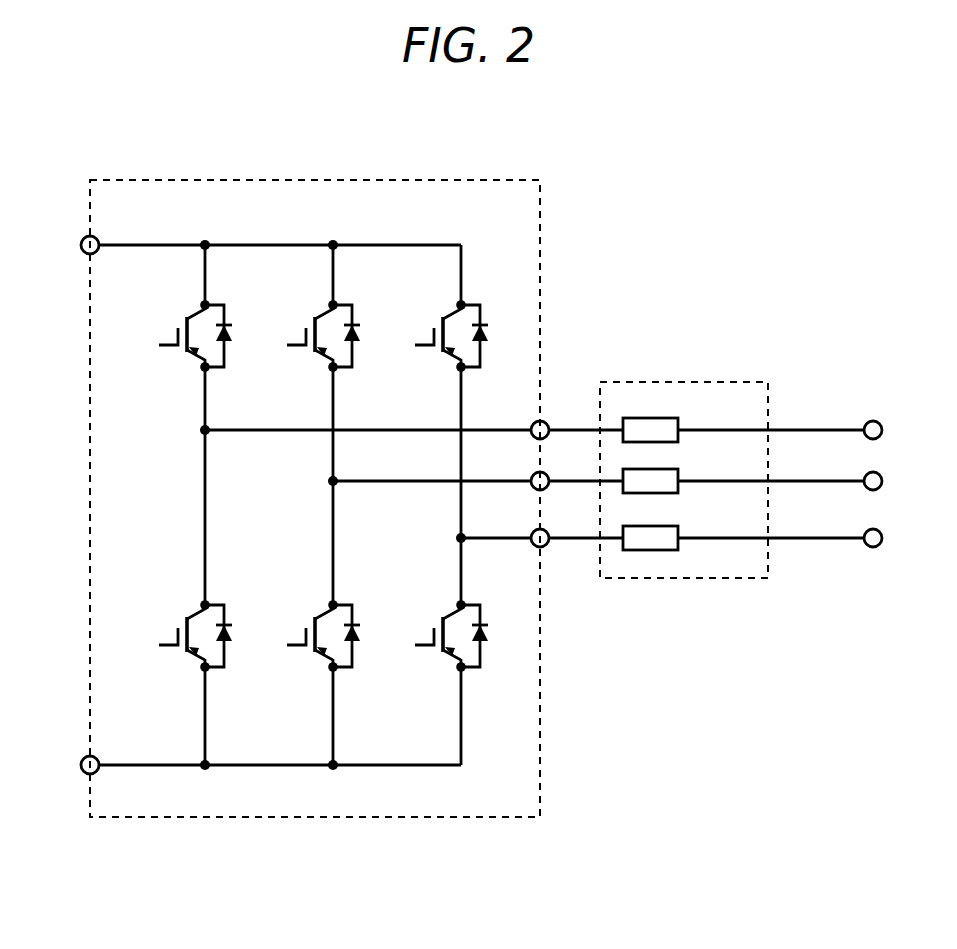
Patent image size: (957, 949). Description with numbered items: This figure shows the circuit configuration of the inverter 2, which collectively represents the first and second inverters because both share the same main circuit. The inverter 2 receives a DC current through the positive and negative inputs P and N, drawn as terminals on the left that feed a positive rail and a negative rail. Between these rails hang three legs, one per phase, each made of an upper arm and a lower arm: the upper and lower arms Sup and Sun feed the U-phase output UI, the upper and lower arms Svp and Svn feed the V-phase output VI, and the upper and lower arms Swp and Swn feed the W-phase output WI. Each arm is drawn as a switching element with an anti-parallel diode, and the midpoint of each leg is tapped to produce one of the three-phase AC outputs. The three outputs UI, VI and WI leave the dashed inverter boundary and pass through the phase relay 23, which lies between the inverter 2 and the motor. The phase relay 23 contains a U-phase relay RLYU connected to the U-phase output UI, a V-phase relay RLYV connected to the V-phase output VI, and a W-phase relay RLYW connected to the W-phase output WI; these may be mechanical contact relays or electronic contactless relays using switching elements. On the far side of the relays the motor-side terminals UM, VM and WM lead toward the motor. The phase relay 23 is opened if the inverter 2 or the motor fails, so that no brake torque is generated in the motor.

The inverter 2 is at (335, 817).
The phase relay 23 is at (688, 580).
The positive input P is at (68, 244).
The negative input N is at (67, 764).
The U-phase output UI is at (523, 415).
The V-phase output VI is at (523, 467).
The W-phase output WI is at (519, 524).
The motor U-phase terminal UM is at (843, 412).
The motor V-phase terminal VM is at (843, 468).
The motor W-phase terminal WM is at (841, 525).
The upper arm Sup is at (183, 322).
The upper arm Svp is at (314, 322).
The upper arm Swp is at (438, 322).
The lower arm Sun is at (177, 628).
The lower arm Svn is at (306, 628).
The lower arm Swn is at (434, 628).
The U-phase relay RLYU is at (690, 419).
The V-phase relay RLYV is at (690, 473).
The W-phase relay RLYW is at (693, 529).